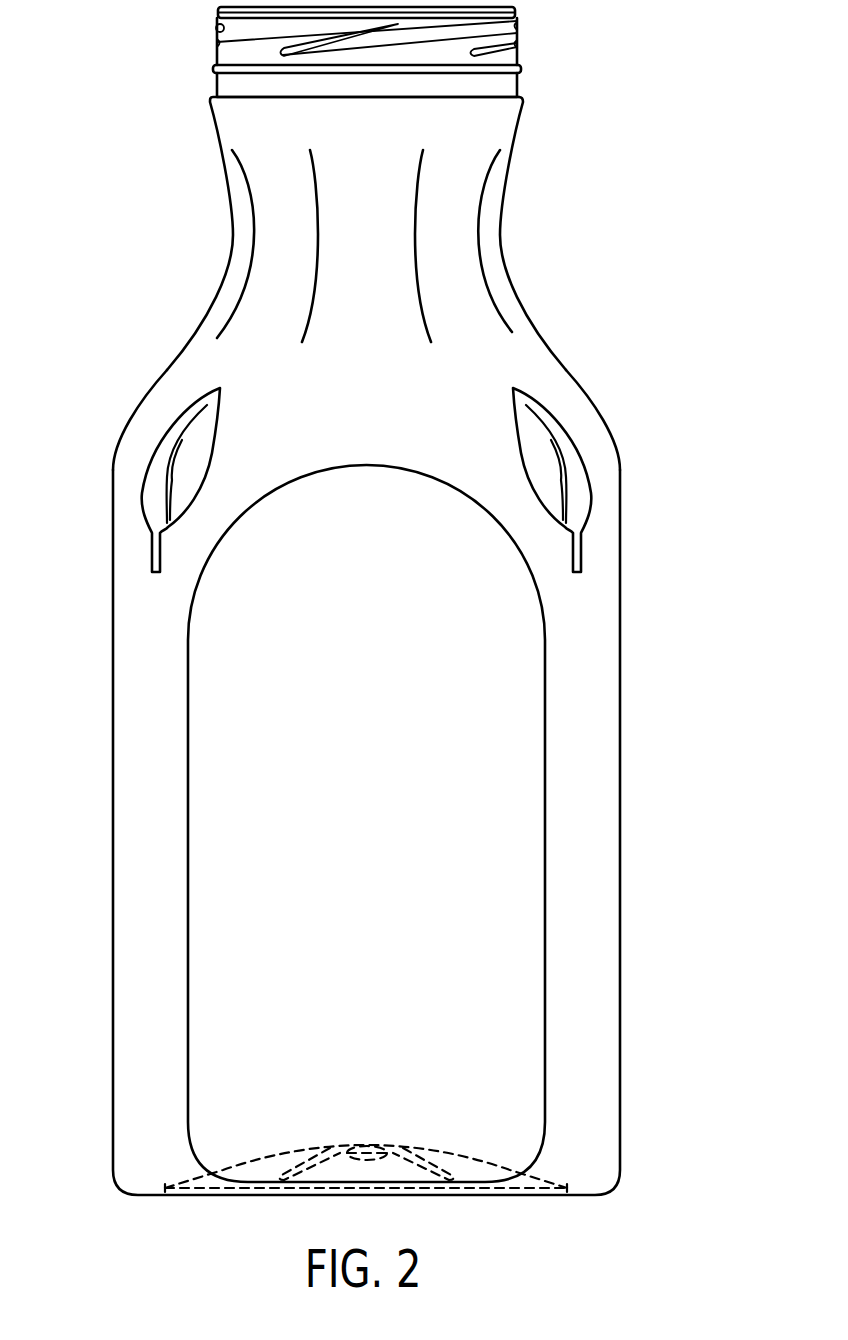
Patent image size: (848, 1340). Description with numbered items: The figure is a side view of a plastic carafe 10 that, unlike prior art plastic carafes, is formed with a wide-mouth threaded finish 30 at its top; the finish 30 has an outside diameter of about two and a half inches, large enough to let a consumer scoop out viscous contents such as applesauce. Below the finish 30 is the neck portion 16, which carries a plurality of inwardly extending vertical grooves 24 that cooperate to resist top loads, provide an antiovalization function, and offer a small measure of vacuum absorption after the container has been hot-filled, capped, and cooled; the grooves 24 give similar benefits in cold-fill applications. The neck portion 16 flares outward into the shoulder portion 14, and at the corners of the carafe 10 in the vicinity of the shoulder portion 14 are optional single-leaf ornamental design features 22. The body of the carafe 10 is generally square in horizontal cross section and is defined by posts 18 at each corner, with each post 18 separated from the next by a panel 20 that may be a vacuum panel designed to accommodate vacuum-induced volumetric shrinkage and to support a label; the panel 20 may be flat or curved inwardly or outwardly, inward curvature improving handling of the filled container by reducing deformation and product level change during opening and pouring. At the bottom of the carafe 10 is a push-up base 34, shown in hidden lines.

The plastic carafe 10 is at (386, 601).
The shoulder portion 14 is at (600, 407).
The neck portion 16 is at (268, 226).
The post 18 is at (140, 824).
The panel 20 is at (200, 907).
The ornamental design feature 22 is at (143, 495).
The groove 24 is at (253, 238).
The wide-mouth threaded finish 30 is at (216, 58).
The push-up base 34 is at (407, 1143).